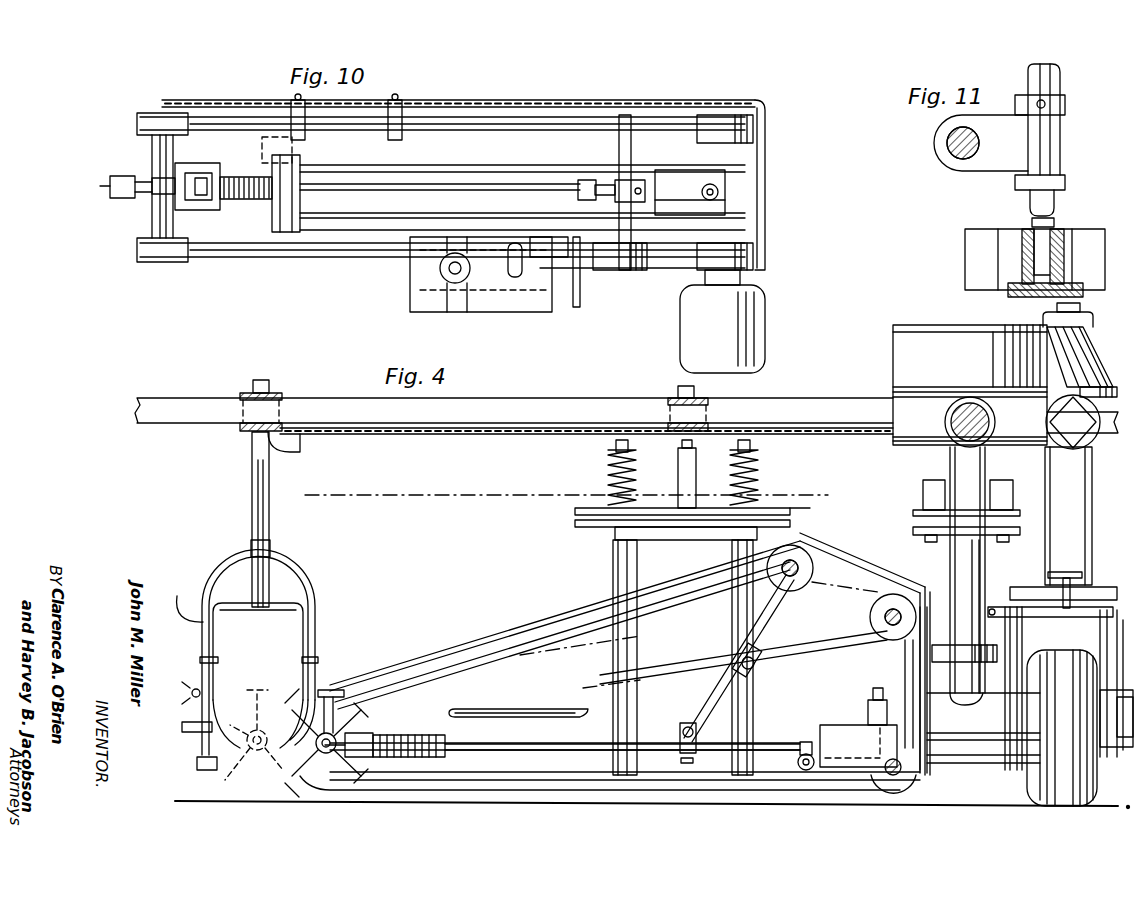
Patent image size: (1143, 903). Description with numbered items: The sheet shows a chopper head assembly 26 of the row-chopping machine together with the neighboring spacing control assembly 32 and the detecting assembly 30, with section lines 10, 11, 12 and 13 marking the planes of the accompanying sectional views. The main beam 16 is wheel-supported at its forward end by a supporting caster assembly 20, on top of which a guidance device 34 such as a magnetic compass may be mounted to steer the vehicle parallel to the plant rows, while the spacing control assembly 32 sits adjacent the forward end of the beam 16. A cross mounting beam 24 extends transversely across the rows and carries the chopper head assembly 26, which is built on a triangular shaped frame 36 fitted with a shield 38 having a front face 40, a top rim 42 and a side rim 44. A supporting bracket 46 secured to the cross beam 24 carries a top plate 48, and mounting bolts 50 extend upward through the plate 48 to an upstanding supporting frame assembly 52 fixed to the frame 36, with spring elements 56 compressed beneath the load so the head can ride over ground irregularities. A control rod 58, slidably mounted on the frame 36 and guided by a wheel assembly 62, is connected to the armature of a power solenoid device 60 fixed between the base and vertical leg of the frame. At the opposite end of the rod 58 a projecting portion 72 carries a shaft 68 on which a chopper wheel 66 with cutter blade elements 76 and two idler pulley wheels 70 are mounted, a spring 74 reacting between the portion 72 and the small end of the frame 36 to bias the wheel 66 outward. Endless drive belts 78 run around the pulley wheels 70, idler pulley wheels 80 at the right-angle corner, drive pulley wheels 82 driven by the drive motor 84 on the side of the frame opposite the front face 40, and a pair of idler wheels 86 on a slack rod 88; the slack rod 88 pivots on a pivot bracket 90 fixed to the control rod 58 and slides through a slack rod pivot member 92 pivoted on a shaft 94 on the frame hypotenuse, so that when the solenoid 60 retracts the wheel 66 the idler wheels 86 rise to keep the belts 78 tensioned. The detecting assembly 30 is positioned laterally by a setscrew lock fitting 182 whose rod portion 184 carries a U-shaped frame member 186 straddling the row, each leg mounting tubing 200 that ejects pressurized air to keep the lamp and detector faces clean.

In FIG. 4, the section line 10 is at (302, 540).
In FIG. 4, the section line 11 is at (720, 648).
In FIG. 4, the section line 12 is at (760, 697).
In FIG. 4, the section line 13 is at (733, 697).
In FIG. 4, the main beam 16 is at (966, 400).
In FIG. 4, the supporting caster assembly 20 is at (1020, 782).
In FIG. 4, the cross mounting beam 24 is at (530, 400).
In FIG. 4, the chopper head assembly 26 is at (541, 600).
In FIG. 4, the spacing count control assembly 30 is at (225, 540).
In FIG. 4, the spacing control assembly 32 is at (921, 325).
In FIG. 4, the guidance device 34 is at (1042, 318).
In FIG. 10, the triangular shaped frame 36 is at (312, 225).
In FIG. 11, the triangular shaped frame 36 is at (1075, 240).
In FIG. 4, the triangular shaped frame 36 is at (478, 710).
In FIG. 10, the shield 38 is at (438, 100).
In FIG. 4, the shield 38 is at (494, 624).
In FIG. 10, the front face 40 is at (498, 100).
In FIG. 4, the front face 40 is at (580, 662).
In FIG. 4, the top rim 42 is at (578, 600).
In FIG. 10, the side rim 44 is at (766, 150).
In FIG. 4, the side rim 44 is at (932, 735).
In FIG. 4, the supporting bracket 46 is at (668, 398).
In FIG. 10, the top plate 48 is at (412, 285).
In FIG. 4, the top plate 48 is at (745, 508).
In FIG. 4, the mounting bolts 50 is at (612, 450).
In FIG. 4, the upstanding supporting frame assembly 52 is at (592, 530).
In FIG. 4, the spring elements 56 is at (608, 474).
In FIG. 10, the control rod 58 is at (355, 196).
In FIG. 4, the control rod 58 is at (510, 752).
In FIG. 10, the power solenoid device 60 is at (690, 192).
In FIG. 4, the power solenoid device 60 is at (858, 727).
In FIG. 4, the wheel assembly 62 is at (800, 748).
In FIG. 10, the chopper wheel 66 is at (148, 182).
In FIG. 4, the chopper wheel 66 is at (308, 760).
In FIG. 4, the shaft 68 is at (335, 758).
In FIG. 10, the idler pulley wheels 70 is at (140, 116).
In FIG. 4, the idler pulley wheels 70 is at (244, 742).
In FIG. 10, the projecting portion 72 is at (200, 165).
In FIG. 4, the projecting portion 72 is at (372, 758).
In FIG. 10, the spring 74 is at (245, 200).
In FIG. 4, the spring 74 is at (415, 760).
In FIG. 10, the cutter blade elements 76 is at (100, 186).
In FIG. 4, the cutter blade elements 76 is at (300, 762).
In FIG. 10, the endless drive belts 78 is at (228, 118).
In FIG. 4, the endless drive belts 78 is at (394, 688).
In FIG. 4, the idler pulley wheels 80 is at (908, 782).
In FIG. 10, the drive pulley wheels 82 is at (748, 116).
In FIG. 4, the drive pulley wheels 82 is at (812, 598).
In FIG. 10, the drive motor 84 is at (766, 320).
In FIG. 10, the idler wheels 86 is at (615, 271).
In FIG. 4, the idler wheels 86 is at (795, 546).
In FIG. 10, the slack rod 88 is at (600, 180).
In FIG. 11, the slack rod 88 is at (950, 150).
In FIG. 4, the slack rod 88 is at (790, 612).
In FIG. 4, the pivot bracket 90 is at (682, 752).
In FIG. 11, the slack rod pivot member 92 is at (1060, 140).
In FIG. 11, the shaft 94 is at (1056, 204).
In FIG. 4, the setscrew lock fitting 182 is at (280, 393).
In FIG. 4, the rod portion 184 is at (271, 548).
In FIG. 4, the U-shaped frame member 186 is at (189, 670).
In FIG. 4, the tubing 200 is at (412, 436).